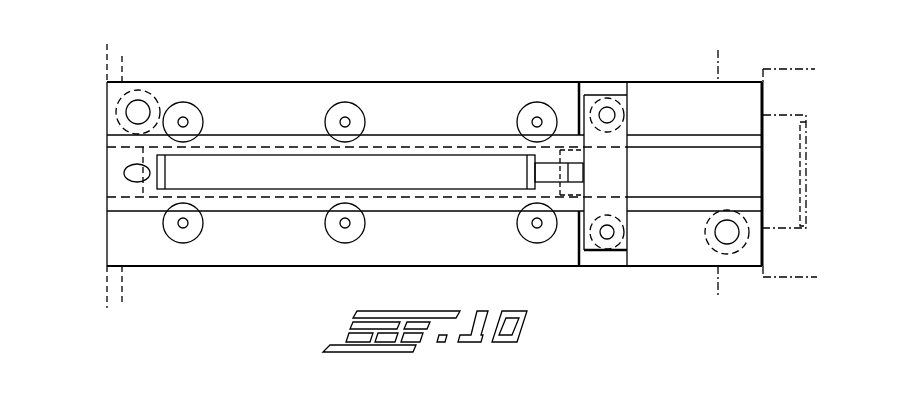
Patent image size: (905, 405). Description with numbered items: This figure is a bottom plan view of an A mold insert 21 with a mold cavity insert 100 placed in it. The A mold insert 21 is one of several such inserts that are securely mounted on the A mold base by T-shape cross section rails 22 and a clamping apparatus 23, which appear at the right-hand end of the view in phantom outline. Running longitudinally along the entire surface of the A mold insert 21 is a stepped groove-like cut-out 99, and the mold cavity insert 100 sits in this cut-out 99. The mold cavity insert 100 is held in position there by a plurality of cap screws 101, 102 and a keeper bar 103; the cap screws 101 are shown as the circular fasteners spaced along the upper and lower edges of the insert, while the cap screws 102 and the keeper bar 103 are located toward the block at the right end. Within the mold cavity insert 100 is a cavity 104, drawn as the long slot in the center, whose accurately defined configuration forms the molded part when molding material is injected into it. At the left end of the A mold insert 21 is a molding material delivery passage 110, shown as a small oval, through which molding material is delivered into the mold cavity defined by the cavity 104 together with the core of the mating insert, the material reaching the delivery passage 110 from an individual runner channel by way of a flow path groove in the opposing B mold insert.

The A mold insert 21 is at (535, 82).
The T-shape cross section rails 22 is at (713, 72).
The clamping apparatus 23 is at (795, 66).
The stepped groove-like cut-out 99 is at (758, 140).
The mold cavity insert 100 is at (277, 208).
The cap screws 101 is at (183, 238).
The cap screws 102 is at (623, 223).
The keeper bar 103 is at (618, 245).
The cavity 104 is at (435, 168).
The molding material delivery passage 110 is at (124, 172).